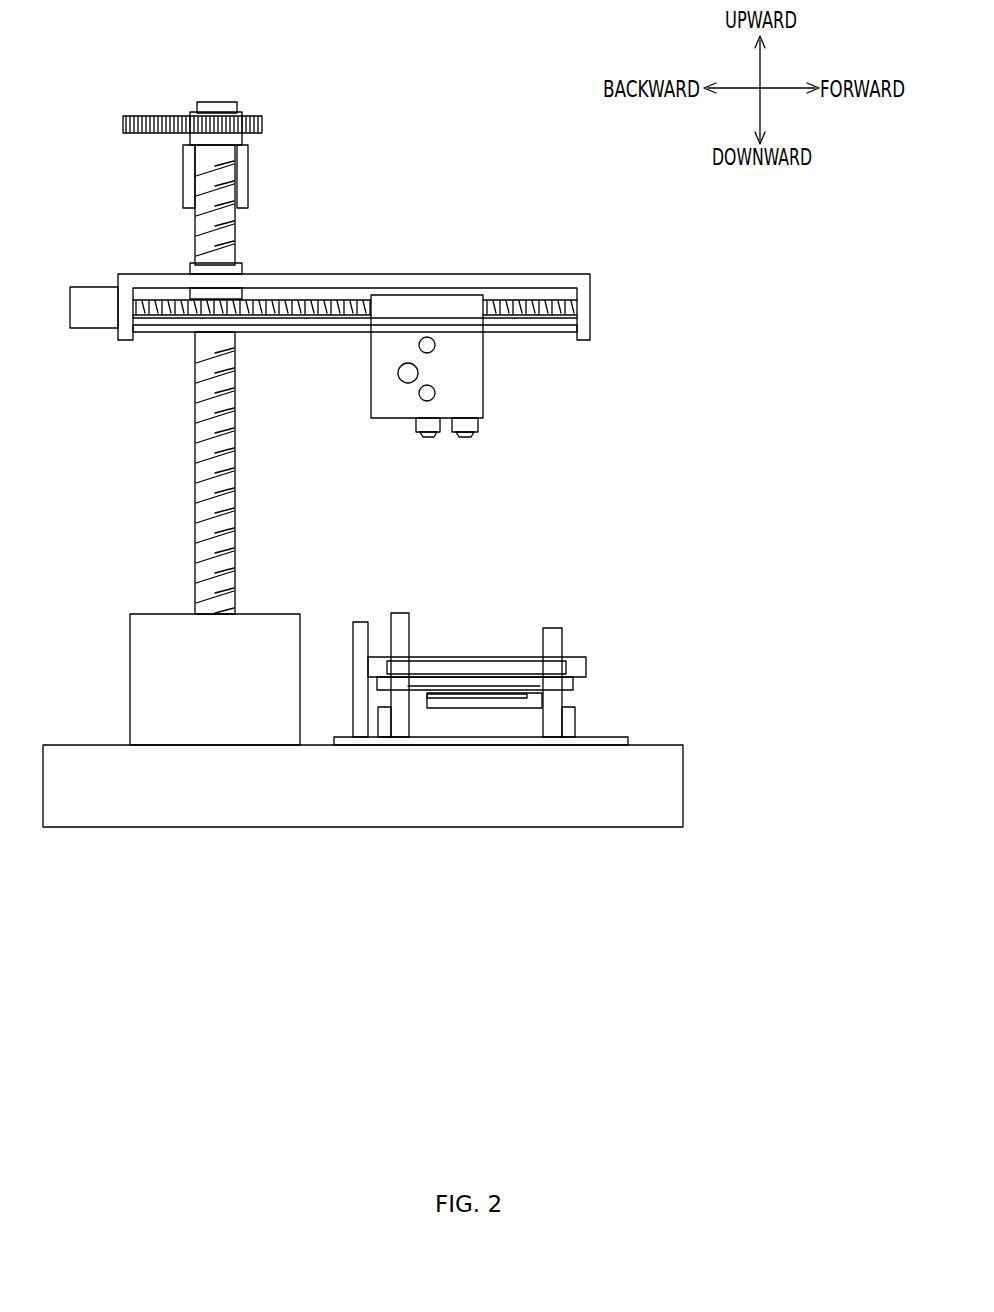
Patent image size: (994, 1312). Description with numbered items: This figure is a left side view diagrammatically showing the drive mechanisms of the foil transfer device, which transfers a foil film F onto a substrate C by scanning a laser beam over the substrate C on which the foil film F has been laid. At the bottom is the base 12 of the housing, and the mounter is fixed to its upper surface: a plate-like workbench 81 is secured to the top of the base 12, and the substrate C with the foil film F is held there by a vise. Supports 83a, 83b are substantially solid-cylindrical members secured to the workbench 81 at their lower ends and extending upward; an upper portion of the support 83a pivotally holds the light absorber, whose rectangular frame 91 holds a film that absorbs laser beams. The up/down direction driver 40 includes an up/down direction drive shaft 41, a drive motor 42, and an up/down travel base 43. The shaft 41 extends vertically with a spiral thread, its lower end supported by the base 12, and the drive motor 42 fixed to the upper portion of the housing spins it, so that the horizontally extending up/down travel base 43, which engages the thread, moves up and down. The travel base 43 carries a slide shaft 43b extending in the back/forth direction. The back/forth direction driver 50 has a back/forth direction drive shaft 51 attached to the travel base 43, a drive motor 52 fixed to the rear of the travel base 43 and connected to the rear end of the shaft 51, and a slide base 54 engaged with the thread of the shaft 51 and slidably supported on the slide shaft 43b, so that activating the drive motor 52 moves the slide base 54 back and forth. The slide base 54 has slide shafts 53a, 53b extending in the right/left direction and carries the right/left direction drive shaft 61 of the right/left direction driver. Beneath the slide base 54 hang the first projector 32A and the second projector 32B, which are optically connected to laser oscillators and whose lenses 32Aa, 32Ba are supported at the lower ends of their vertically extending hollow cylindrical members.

The base 12 is at (683, 791).
The up/down direction driver 40 is at (279, 84).
The up/down direction drive shaft 41 is at (195, 424).
The drive motor 42 is at (193, 208).
The up/down travel base 43 is at (360, 270).
The slide shaft 43b is at (292, 333).
The back/forth direction driver 50 is at (498, 405).
The back/forth direction drive shaft 51 is at (516, 300).
The drive motor 52 is at (95, 328).
The slide shaft 53a is at (437, 343).
The slide shaft 53b is at (436, 394).
The slide base 54 is at (452, 371).
The right/left direction drive shaft 61 is at (398, 373).
The first projector 32A is at (416, 432).
The lens 32Aa is at (430, 437).
The second projector 32B is at (478, 430).
The lens 32Ba is at (465, 437).
The frame 91 is at (462, 662).
The foil film F is at (527, 696).
The substrate C is at (542, 703).
The support 83a is at (402, 727).
The support 83b is at (552, 730).
The workbench 81 is at (604, 742).